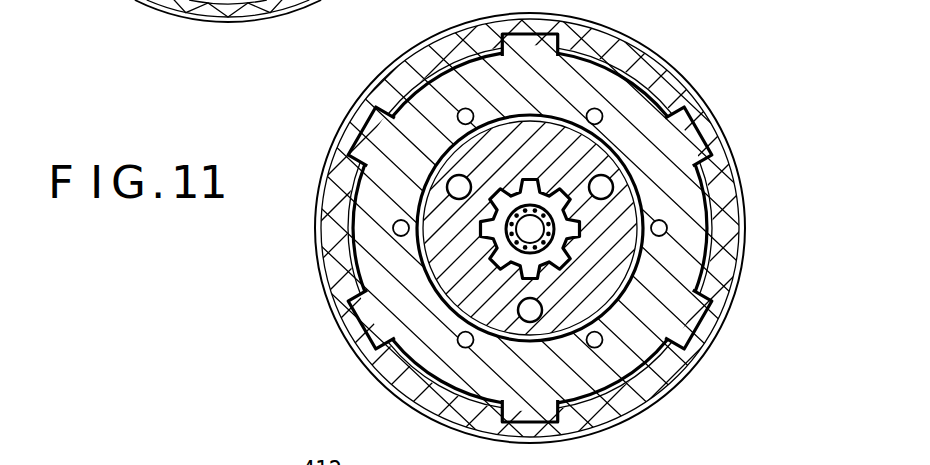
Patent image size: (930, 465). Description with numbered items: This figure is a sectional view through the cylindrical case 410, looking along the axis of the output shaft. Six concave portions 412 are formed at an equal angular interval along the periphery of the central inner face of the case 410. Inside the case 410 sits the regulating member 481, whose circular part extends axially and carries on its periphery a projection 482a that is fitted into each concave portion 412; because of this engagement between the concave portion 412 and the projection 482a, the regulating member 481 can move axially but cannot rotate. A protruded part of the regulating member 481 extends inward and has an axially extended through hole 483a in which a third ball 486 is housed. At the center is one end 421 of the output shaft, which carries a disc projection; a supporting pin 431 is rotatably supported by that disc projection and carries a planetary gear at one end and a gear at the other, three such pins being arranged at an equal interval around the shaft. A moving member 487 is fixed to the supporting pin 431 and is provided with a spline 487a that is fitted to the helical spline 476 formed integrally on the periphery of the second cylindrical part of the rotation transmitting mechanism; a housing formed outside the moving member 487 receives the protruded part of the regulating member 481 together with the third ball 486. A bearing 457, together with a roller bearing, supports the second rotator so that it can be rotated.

The cylindrical case 410 is at (648, 68).
The concave portions 412 is at (605, 25).
The one end of the output shaft 421 is at (527, 232).
The supporting pin 431 is at (608, 190).
The bearing 457 is at (500, 252).
The helical spline 476 is at (585, 283).
The regulating member 481 is at (643, 120).
The projection 482a is at (690, 138).
The through hole 483a is at (662, 226).
The third ball 486 is at (666, 232).
The moving member 487 is at (590, 287).
The spline 487a is at (545, 272).